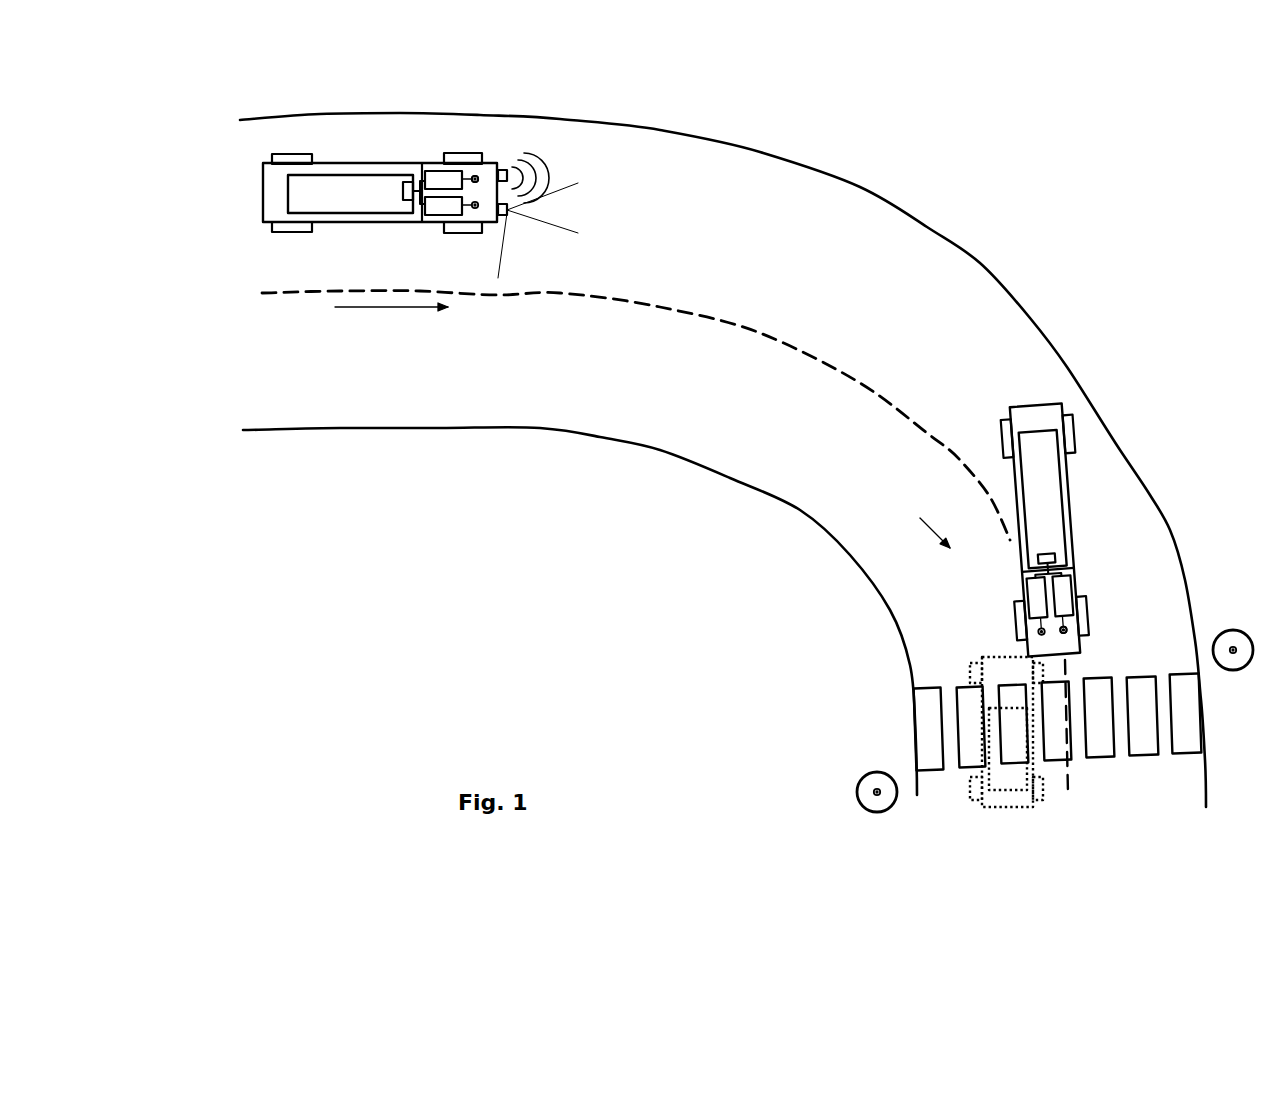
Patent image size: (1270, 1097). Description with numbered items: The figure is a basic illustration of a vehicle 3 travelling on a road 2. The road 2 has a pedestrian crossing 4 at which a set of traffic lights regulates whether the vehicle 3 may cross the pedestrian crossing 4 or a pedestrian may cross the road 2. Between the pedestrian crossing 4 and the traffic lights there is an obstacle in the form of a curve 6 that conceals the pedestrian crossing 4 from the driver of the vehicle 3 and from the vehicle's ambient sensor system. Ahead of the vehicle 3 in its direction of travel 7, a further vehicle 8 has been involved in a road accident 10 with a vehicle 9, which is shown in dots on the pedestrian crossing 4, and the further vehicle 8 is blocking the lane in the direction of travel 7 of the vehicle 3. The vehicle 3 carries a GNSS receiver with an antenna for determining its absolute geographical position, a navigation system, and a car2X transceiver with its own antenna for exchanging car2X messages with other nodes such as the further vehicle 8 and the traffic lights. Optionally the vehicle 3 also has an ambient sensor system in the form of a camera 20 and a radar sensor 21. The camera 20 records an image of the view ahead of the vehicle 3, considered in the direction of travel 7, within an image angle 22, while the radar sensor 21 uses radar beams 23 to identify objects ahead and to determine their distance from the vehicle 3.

The road 2 is at (337, 392).
The vehicle 3 is at (347, 163).
The pedestrian crossing 4 is at (925, 707).
The curve 6 is at (1070, 175).
The direction of travel 7 is at (392, 308).
The further vehicle 8 is at (1075, 492).
The vehicle 9 is at (1032, 807).
The road accident 10 is at (924, 521).
The camera 20 is at (498, 278).
The radar sensor 21 is at (503, 170).
The image angle 22 is at (547, 191).
The radar beams 23 is at (530, 153).